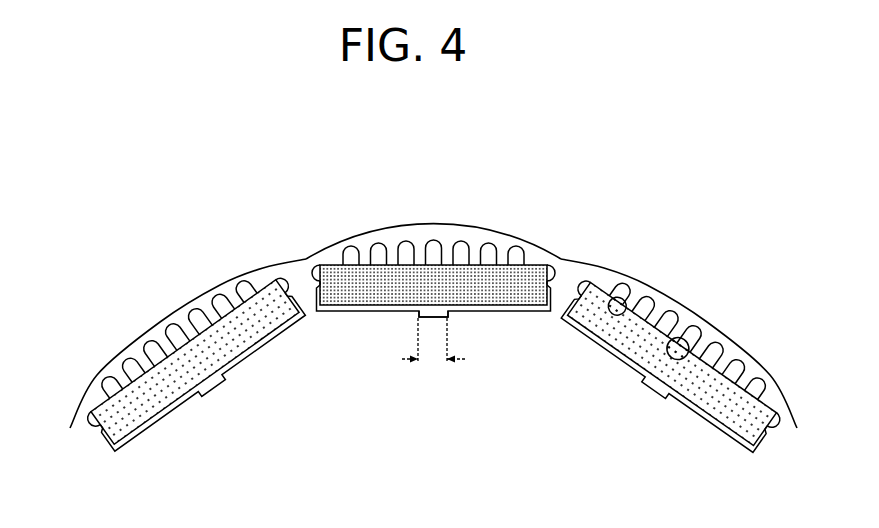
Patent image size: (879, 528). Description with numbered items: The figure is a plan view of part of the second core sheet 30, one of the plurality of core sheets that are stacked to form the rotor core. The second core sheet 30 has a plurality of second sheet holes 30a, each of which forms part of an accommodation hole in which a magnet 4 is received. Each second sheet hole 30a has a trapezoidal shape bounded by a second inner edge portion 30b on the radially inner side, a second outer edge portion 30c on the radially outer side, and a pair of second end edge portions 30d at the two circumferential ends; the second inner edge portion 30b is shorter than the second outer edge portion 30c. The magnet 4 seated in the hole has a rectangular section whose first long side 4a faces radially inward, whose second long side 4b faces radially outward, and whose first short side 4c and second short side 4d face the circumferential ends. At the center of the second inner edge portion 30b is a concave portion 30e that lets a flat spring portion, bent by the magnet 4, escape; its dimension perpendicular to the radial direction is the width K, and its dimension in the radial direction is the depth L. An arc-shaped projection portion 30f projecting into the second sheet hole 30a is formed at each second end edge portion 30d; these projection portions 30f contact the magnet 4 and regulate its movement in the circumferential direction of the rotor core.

The second core sheet 30 is at (218, 280).
The second sheet hole 30a is at (347, 256).
The second inner edge portion 30b is at (627, 303).
The second outer edge portion 30c is at (703, 343).
The second end edge portion 30d is at (779, 428).
The concave portion 30e is at (434, 318).
The arc-shaped projection portion 30f is at (558, 262).
The magnet 4 is at (97, 375).
The first long side 4a is at (165, 427).
The second long side 4b is at (158, 333).
The first short side 4c is at (284, 278).
The second short side 4d is at (90, 423).
The depth of the concave portion L is at (372, 292).
The width of the concave portion K is at (434, 353).